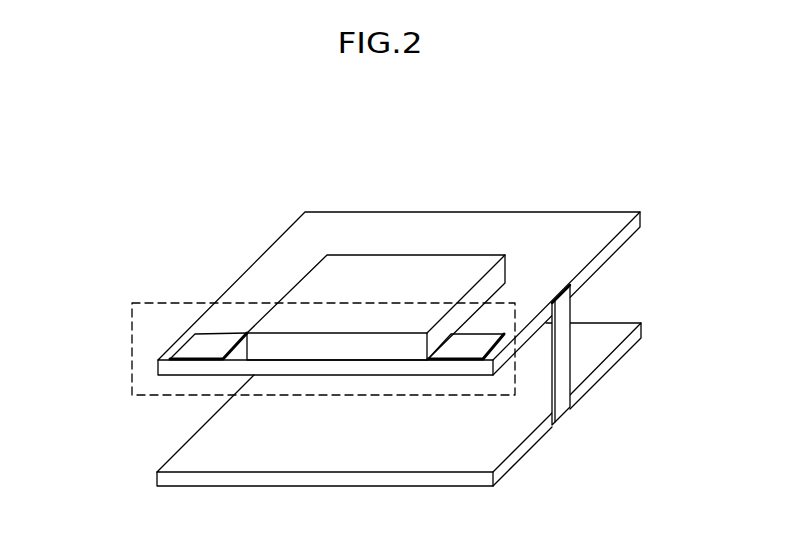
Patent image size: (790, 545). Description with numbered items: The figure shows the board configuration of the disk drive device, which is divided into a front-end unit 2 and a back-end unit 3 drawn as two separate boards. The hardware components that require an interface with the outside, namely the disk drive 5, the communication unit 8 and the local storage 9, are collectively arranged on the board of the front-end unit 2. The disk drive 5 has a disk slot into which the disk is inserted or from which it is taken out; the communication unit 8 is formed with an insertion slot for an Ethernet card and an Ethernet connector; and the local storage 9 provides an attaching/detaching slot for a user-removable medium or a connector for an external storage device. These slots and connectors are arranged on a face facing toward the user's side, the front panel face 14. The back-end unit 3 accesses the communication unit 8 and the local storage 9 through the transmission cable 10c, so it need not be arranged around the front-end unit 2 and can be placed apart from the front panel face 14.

The front-end unit 2 is at (317, 230).
The back-end unit 3 is at (183, 460).
The disk drive 5 is at (290, 290).
The communication unit 8 is at (203, 345).
The local storage 9 is at (468, 343).
The front panel face 14 is at (133, 352).
The transmission cable 10c is at (565, 352).